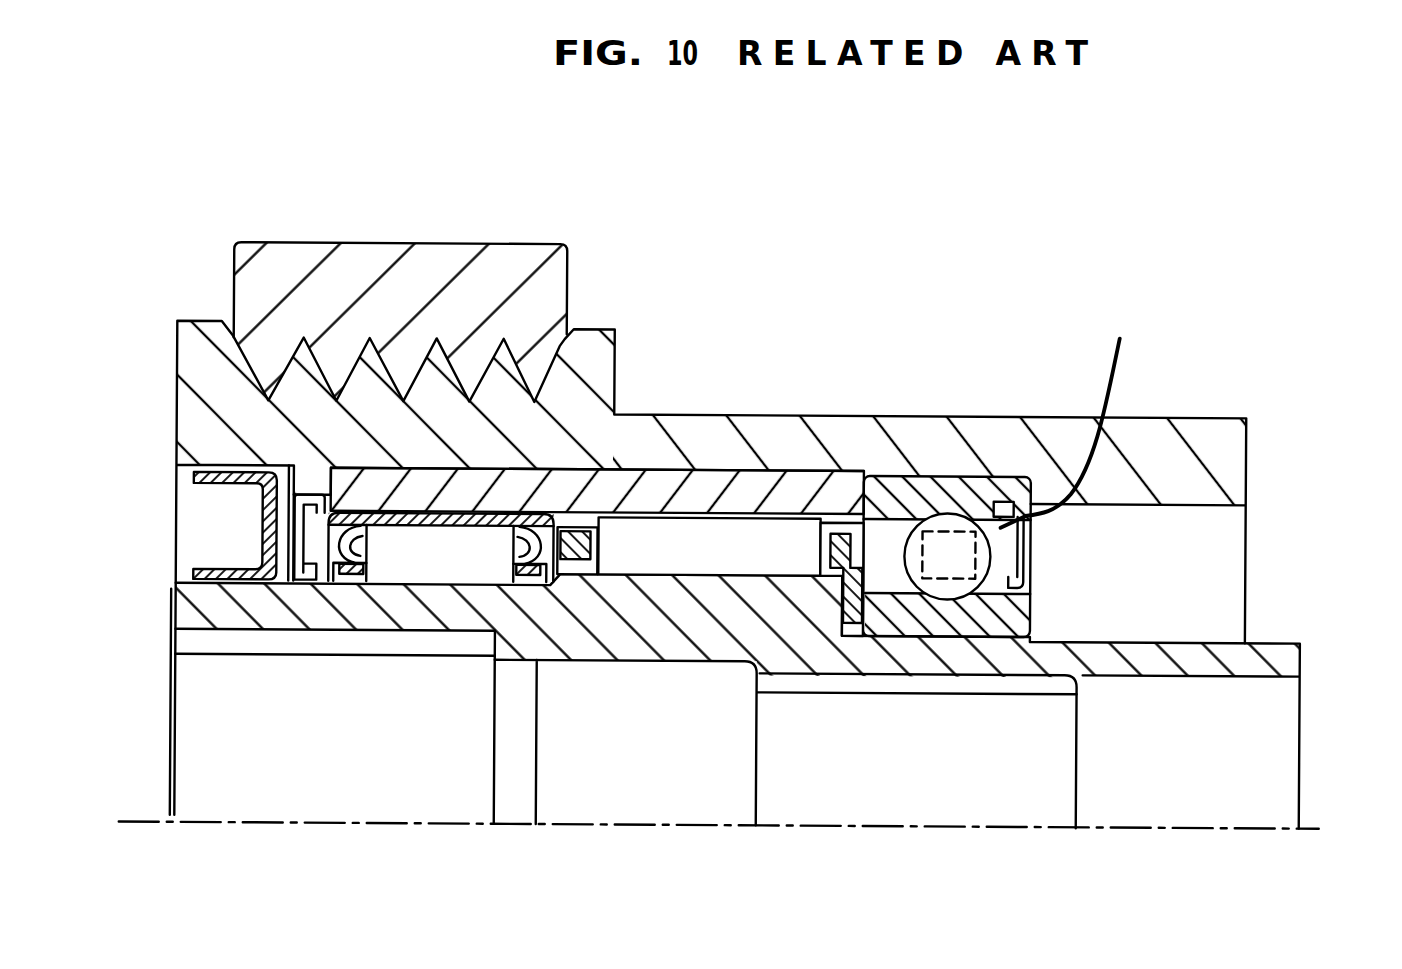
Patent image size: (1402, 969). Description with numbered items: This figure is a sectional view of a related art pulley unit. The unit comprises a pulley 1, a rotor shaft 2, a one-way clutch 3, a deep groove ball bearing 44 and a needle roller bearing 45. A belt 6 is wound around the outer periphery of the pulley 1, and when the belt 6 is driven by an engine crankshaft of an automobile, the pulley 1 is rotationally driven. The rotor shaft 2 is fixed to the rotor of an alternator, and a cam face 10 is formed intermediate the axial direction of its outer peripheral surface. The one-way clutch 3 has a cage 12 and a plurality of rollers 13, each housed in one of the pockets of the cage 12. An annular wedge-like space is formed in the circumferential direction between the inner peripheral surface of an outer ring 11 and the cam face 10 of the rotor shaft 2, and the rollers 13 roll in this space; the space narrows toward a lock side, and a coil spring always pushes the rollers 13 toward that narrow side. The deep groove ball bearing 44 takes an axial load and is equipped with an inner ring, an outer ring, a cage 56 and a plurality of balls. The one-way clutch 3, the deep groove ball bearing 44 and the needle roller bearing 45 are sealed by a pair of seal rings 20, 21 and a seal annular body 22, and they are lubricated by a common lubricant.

The pulley 1 is at (1213, 437).
The rotor shaft 2 is at (1283, 657).
The one-way clutch 3 is at (608, 458).
The belt 6 is at (356, 262).
The cam face 10 is at (697, 575).
The outer ring 11 is at (568, 480).
The cage 12 is at (578, 548).
The rollers 13 is at (643, 537).
The seal ring 20 is at (1022, 520).
The seal ring 21 is at (288, 528).
The seal annular body 22 is at (195, 567).
The deep groove ball bearing 44 is at (962, 475).
The needle roller bearing 45 is at (465, 514).
The cage 56 is at (1079, 411).